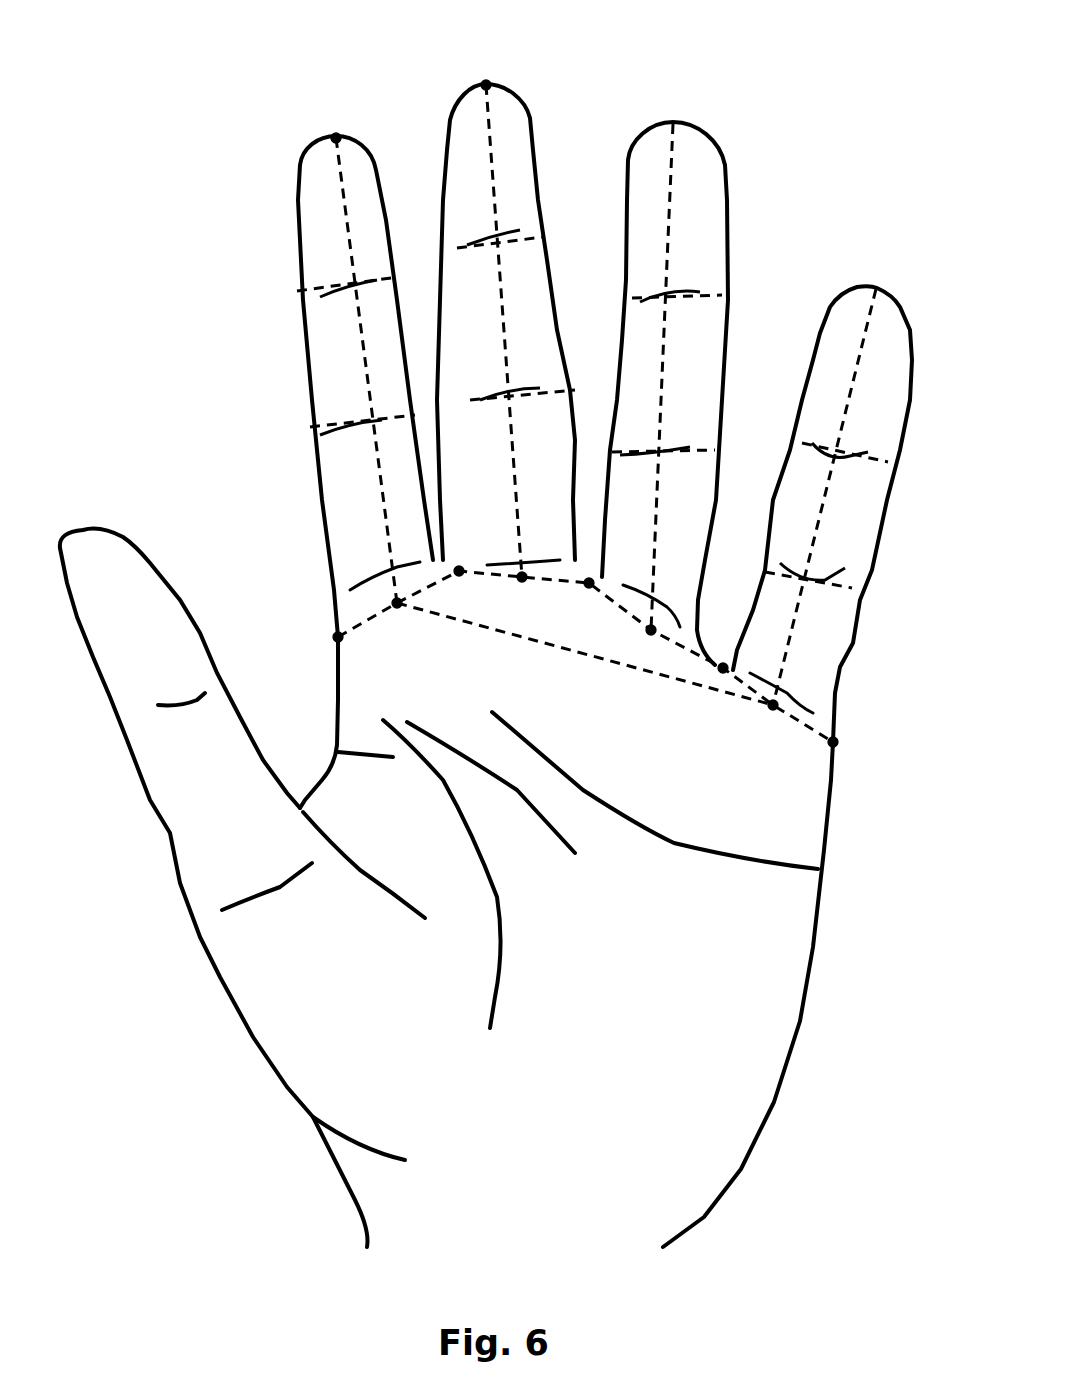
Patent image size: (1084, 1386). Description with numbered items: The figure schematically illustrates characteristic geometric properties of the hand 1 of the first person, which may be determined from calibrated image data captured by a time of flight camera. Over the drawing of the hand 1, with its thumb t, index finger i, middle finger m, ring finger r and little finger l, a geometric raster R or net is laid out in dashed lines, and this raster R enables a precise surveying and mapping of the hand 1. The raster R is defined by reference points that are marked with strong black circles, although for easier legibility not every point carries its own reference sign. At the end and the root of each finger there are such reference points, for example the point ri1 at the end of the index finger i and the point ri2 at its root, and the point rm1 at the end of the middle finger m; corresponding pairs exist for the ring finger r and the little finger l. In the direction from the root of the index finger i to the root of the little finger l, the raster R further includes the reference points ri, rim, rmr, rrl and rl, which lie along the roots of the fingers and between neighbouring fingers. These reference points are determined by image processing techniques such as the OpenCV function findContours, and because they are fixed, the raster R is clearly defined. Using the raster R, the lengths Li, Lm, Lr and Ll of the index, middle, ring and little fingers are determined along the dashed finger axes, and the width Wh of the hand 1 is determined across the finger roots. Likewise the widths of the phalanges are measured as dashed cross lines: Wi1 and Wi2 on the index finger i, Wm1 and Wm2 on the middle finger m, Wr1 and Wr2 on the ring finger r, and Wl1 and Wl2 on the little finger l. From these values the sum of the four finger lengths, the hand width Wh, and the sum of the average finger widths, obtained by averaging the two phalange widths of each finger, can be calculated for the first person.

The hand 1 is at (146, 937).
The thumb t is at (80, 500).
The index finger i is at (302, 126).
The middle finger m is at (451, 76).
The ring finger r is at (723, 116).
The little finger l is at (843, 282).
The length of the index finger Li is at (340, 177).
The length of the middle finger Lm is at (487, 133).
The length of the ring finger Lr is at (665, 178).
The length of the little finger Ll is at (873, 312).
The first phalange width of the index finger Wi1 is at (297, 290).
The second phalange width of the index finger Wi2 is at (320, 427).
The first phalange width of the middle finger Wm1 is at (538, 235).
The second phalange width of the middle finger Wm2 is at (560, 383).
The first phalange width of the ring finger Wr1 is at (713, 292).
The second phalange width of the ring finger Wr2 is at (710, 447).
The first phalange width of the little finger Wl1 is at (880, 462).
The second phalange width of the little finger Wl2 is at (845, 590).
The width of the hand Wh is at (505, 635).
The reference point at the end of the index finger ri1 is at (336, 137).
The reference point at the end of the middle finger rm1 is at (487, 85).
The reference point at the root of the index finger ri is at (337, 634).
The reference point at the root of the index finger ri2 is at (404, 607).
The reference point between index and middle finger rim is at (462, 568).
The reference point between middle and ring finger rmr is at (598, 578).
The reference point between ring and little finger rrl is at (733, 663).
The reference point at the root of the little finger rl is at (840, 743).
The geometric raster R is at (632, 694).